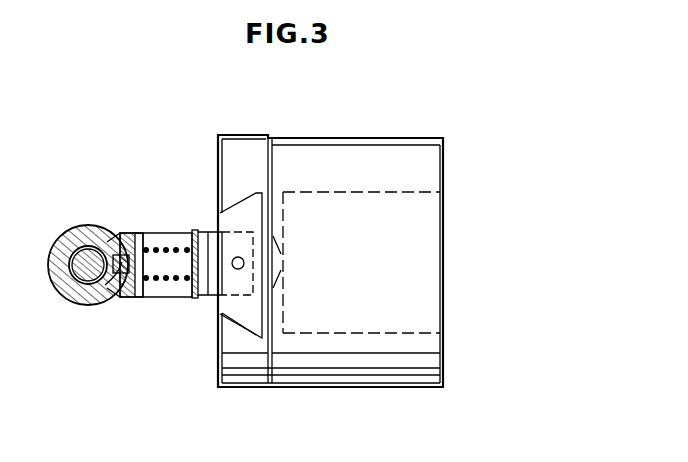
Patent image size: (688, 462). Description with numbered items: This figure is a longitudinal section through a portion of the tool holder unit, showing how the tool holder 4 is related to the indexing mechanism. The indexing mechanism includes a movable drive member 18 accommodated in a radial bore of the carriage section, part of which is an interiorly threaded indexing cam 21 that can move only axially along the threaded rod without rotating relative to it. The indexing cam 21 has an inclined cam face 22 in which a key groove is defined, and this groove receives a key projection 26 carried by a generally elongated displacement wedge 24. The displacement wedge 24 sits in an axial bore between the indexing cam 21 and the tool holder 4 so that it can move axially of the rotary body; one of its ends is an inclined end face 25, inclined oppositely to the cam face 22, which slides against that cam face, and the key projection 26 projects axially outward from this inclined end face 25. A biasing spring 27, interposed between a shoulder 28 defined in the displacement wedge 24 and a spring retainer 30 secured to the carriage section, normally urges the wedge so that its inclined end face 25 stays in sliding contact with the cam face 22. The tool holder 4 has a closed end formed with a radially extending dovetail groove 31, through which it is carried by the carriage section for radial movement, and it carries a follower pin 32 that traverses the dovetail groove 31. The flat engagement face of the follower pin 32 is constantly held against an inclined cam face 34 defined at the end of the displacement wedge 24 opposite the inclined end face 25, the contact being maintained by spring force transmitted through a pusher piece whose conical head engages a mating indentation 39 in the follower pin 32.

The tool holder 4 is at (357, 347).
The movable drive member 18 is at (88, 252).
The indexing cam 21 is at (70, 241).
The inclined cam face 22 is at (137, 240).
The displacement wedge 24 is at (172, 297).
The inclined end face 25 is at (101, 303).
The key projection 26 is at (118, 255).
The biasing spring 27 is at (162, 248).
The shoulder 28 is at (148, 295).
The spring retainer 30 is at (218, 288).
The dovetail groove 31 is at (220, 212).
The follower pin 32 is at (243, 318).
The inclined cam face 34 is at (212, 330).
The indentation 39 is at (238, 257).